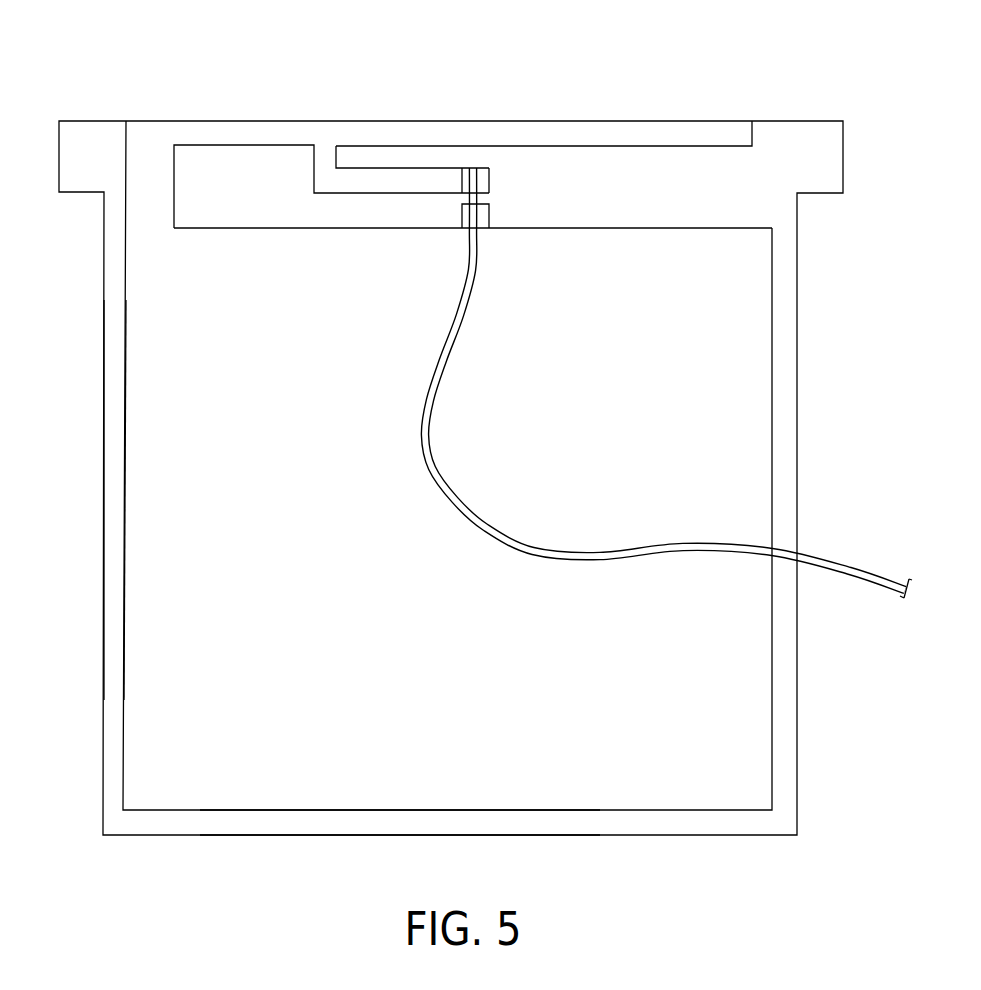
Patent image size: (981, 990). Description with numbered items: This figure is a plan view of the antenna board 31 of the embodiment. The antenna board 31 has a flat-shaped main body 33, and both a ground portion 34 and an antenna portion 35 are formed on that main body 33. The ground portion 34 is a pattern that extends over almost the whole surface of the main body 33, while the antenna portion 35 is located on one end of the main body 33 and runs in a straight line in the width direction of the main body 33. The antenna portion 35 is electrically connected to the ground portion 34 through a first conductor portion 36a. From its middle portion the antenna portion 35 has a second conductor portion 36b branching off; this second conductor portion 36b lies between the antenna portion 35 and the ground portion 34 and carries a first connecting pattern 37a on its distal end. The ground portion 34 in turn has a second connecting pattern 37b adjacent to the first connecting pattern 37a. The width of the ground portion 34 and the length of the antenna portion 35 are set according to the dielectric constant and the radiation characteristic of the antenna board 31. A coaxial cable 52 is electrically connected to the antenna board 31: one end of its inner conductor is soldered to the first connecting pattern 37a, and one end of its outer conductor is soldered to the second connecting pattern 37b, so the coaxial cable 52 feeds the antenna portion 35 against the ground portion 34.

The antenna board 31 is at (203, 850).
The main body 33 is at (108, 503).
The ground portion 34 is at (300, 798).
The antenna portion 35 is at (479, 129).
The first conductor portion 36a is at (162, 183).
The second conductor portion 36b is at (370, 185).
The first connecting pattern 37a is at (485, 182).
The second connecting pattern 37b is at (485, 215).
The coaxial cable 52 is at (526, 554).